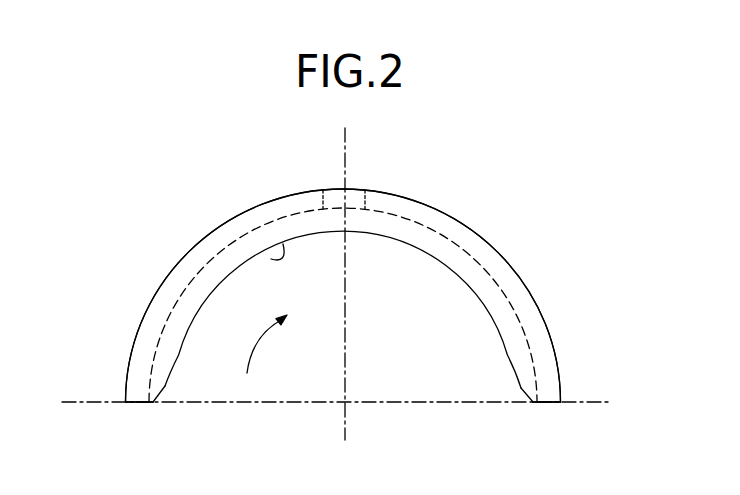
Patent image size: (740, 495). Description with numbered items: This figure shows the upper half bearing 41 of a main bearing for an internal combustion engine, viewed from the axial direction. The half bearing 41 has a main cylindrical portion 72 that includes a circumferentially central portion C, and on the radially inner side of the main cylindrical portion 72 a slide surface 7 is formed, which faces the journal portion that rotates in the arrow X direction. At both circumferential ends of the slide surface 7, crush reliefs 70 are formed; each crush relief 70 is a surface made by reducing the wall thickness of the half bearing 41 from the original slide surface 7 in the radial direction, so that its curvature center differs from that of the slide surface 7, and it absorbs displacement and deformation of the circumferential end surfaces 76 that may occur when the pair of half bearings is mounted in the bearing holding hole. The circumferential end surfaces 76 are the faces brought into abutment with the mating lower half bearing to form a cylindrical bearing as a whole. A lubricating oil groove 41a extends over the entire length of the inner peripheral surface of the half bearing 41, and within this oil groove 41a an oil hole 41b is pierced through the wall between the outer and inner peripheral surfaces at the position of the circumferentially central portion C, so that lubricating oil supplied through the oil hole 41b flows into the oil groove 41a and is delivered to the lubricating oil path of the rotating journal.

The slide surface 7 is at (272, 260).
The half bearing 41 is at (500, 255).
The lubricating oil groove 41a is at (170, 319).
The oil hole 41b is at (357, 190).
The main cylindrical portion 72 is at (301, 211).
The crush relief 70 is at (165, 386).
The circumferential end surface 76 is at (143, 402).
The circumferentially central portion C is at (345, 220).
The arrow X direction X is at (267, 344).